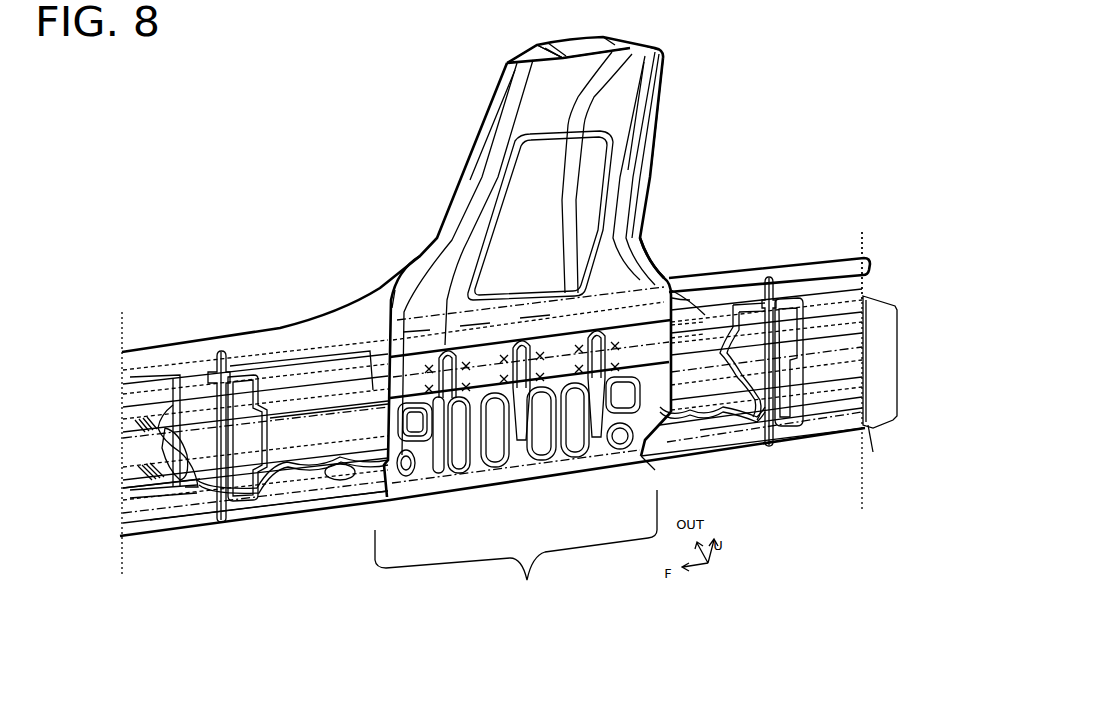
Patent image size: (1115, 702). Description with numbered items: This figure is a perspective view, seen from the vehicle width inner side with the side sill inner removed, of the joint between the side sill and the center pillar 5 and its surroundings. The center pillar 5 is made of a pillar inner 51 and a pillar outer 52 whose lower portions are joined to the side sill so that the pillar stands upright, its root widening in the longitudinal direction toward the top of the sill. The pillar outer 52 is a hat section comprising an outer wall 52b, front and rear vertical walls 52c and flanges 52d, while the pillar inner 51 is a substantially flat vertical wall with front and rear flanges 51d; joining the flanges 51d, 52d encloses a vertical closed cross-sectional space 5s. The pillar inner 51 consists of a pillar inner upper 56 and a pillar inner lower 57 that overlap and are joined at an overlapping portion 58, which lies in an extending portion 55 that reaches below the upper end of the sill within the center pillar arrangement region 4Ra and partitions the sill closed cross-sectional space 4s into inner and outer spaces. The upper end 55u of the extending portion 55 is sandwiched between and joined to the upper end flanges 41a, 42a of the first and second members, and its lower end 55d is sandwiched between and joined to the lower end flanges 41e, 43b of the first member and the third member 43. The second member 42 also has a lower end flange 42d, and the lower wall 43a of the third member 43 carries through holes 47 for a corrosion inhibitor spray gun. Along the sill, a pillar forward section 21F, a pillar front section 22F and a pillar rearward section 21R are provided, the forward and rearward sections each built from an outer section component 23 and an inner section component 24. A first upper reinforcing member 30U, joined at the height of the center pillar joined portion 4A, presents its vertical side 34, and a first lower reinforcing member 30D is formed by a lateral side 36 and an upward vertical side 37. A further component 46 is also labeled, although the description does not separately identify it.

The center pillar 5 is at (457, 122).
The closed cross-sectional space 5s is at (510, 230).
The pillar inner 51 is at (667, 72).
The flange 51d is at (466, 176).
The pillar outer 52 is at (563, 38).
The outer wall 52b is at (556, 42).
The vertical wall 52c is at (540, 58).
The flange 52d is at (506, 64).
The extending portion 55 is at (700, 305).
The upper end 55u is at (690, 284).
The lower end 55d is at (645, 468).
The pillar inner upper 56 is at (654, 264).
The pillar inner lower 57 is at (567, 478).
The overlapping portion 58 is at (707, 322).
The center pillar joined portion 4A is at (385, 276).
The second member 42 is at (833, 253).
The upper end flange 42a is at (133, 368).
The lower end flange 42d is at (128, 475).
The third member 43 is at (712, 466).
The lower wall 43a is at (133, 500).
The lower end flange 43b is at (133, 522).
The upper end flange 41a is at (868, 276).
The lower end flange 41e is at (873, 453).
The closed cross-sectional space 4s is at (848, 349).
The center pillar arrangement region 4Ra is at (516, 548).
The pillar front section 22F is at (367, 356).
The pillar forward section 21F is at (242, 514).
The pillar rearward section 21R is at (801, 441).
The outer section component 23 is at (206, 349).
The inner section component 24 is at (252, 354).
The first upper reinforcing member 30U is at (128, 389).
The first lower reinforcing member 30D is at (280, 460).
The vertical side 34 is at (155, 387).
The lateral side 36 is at (310, 467).
The vertical side 37 is at (307, 427).
The lower connecting member 46 is at (153, 488).
The through holes 47 is at (343, 477).